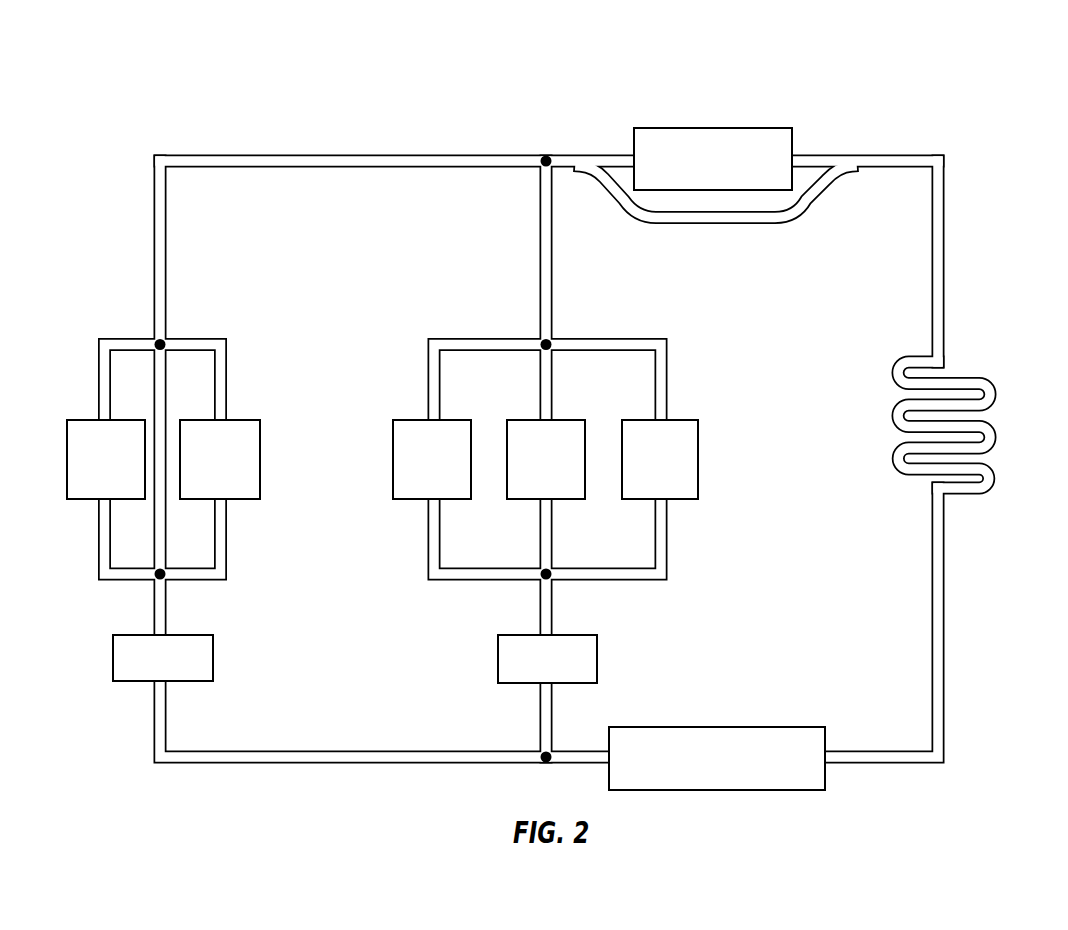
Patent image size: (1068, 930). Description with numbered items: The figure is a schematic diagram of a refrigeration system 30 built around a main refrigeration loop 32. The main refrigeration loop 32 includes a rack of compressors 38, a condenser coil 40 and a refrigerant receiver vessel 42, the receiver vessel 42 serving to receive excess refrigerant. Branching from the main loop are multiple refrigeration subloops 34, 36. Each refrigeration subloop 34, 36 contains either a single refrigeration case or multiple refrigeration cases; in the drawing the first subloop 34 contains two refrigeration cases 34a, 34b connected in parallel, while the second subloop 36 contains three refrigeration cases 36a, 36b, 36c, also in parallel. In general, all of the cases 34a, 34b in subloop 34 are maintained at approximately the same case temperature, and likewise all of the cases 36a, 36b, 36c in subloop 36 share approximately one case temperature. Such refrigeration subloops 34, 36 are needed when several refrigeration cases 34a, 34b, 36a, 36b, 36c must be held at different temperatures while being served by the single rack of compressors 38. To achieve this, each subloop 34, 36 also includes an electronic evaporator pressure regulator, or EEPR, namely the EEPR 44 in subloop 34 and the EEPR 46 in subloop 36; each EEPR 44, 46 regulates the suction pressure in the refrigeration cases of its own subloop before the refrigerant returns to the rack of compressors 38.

The refrigeration system 30 is at (965, 126).
The main refrigeration loop 32 is at (457, 143).
The refrigeration subloop 34 is at (118, 328).
The refrigeration case 34a is at (127, 473).
The refrigeration case 34b is at (242, 473).
The refrigeration subloop 36 is at (455, 328).
The refrigeration case 36a is at (452, 473).
The refrigeration case 36b is at (567, 473).
The refrigeration case 36c is at (682, 473).
The rack of compressors 38 is at (770, 727).
The condenser coil 40 is at (987, 420).
The refrigerant receiver vessel 42 is at (697, 128).
The electronic evaporator pressure regulator (EEPR) 44 is at (213, 657).
The electronic evaporator pressure regulator (EEPR) 46 is at (597, 655).